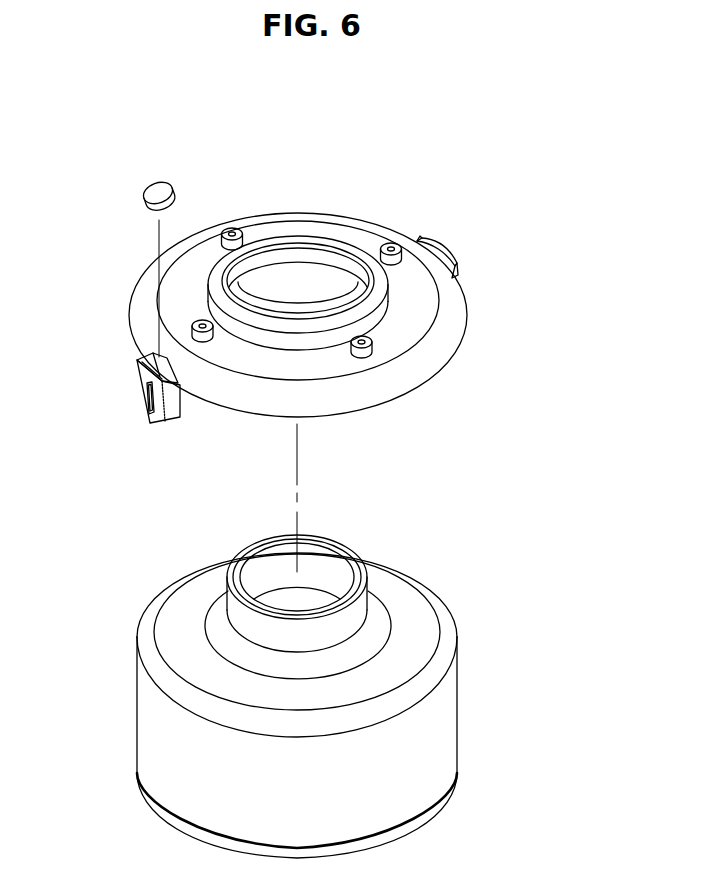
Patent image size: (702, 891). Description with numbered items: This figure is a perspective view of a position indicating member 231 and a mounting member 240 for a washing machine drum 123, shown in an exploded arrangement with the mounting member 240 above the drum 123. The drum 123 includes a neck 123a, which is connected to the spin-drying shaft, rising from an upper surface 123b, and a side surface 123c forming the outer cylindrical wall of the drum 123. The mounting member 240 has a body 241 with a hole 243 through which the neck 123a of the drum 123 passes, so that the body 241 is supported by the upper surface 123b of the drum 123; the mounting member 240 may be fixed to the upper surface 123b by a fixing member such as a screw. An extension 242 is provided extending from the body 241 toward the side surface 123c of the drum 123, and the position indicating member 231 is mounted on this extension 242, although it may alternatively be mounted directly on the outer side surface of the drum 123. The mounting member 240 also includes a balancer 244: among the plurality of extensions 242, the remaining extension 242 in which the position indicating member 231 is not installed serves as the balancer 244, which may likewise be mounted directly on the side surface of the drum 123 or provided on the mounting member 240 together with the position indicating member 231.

The drum 123 is at (350, 696).
The neck 123a is at (353, 610).
The upper surface 123b is at (408, 632).
The side surface 123c is at (437, 728).
The position indicating member 231 is at (161, 181).
The mounting member 240 is at (300, 298).
The body 241 is at (455, 318).
The extension 242 is at (136, 387).
The balancer 244 is at (440, 258).
The hole 243 is at (304, 280).